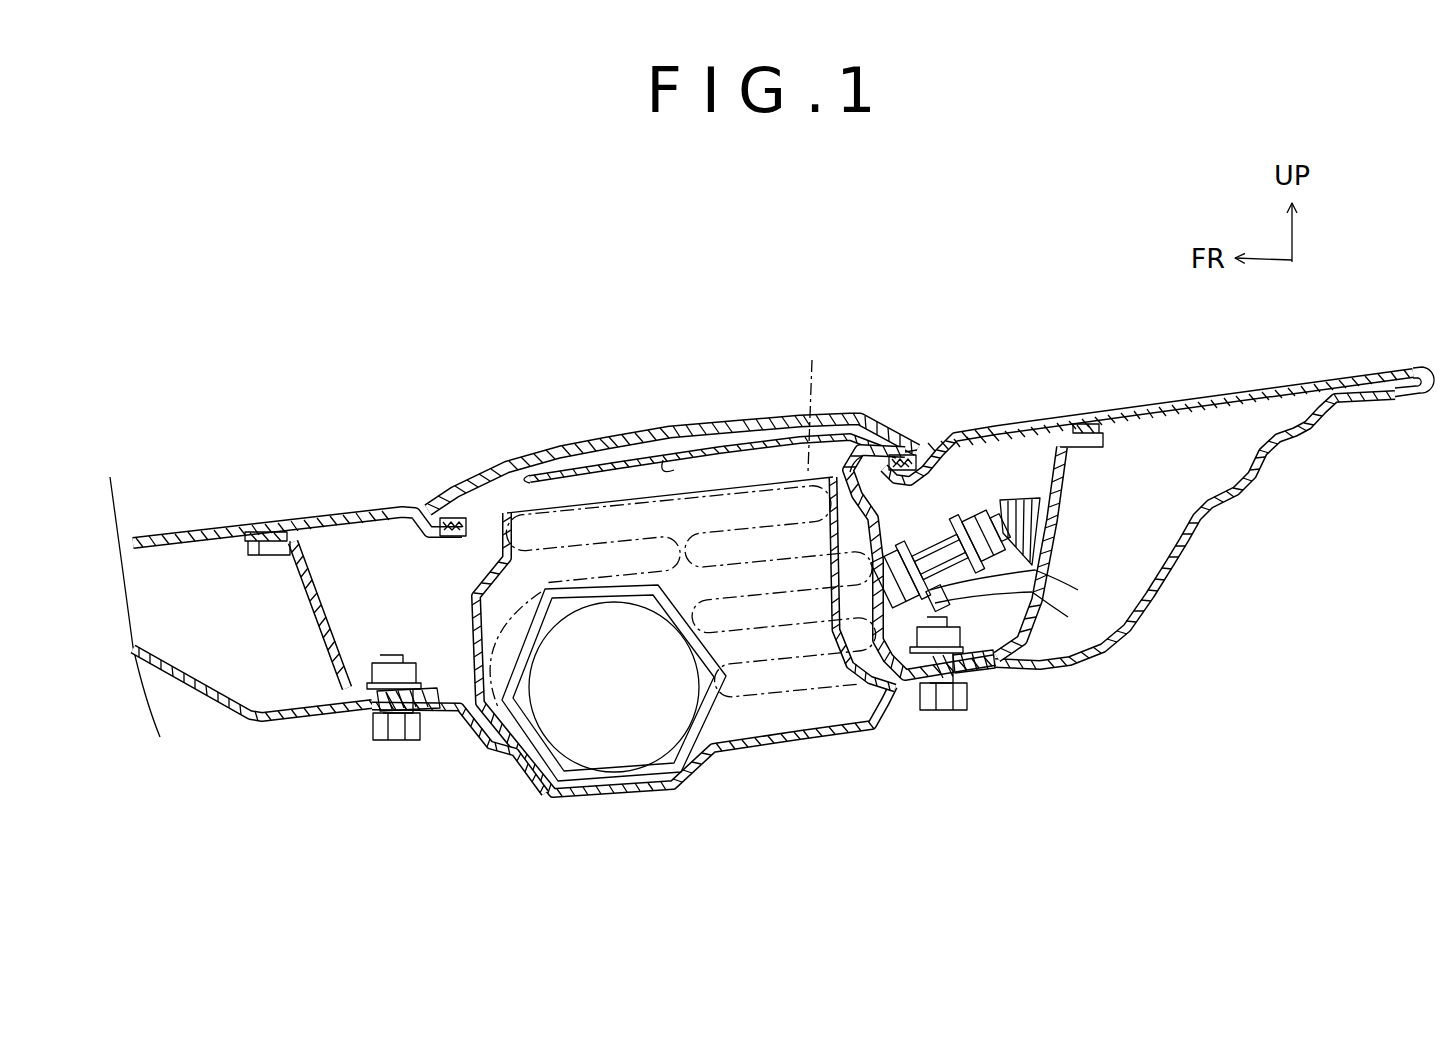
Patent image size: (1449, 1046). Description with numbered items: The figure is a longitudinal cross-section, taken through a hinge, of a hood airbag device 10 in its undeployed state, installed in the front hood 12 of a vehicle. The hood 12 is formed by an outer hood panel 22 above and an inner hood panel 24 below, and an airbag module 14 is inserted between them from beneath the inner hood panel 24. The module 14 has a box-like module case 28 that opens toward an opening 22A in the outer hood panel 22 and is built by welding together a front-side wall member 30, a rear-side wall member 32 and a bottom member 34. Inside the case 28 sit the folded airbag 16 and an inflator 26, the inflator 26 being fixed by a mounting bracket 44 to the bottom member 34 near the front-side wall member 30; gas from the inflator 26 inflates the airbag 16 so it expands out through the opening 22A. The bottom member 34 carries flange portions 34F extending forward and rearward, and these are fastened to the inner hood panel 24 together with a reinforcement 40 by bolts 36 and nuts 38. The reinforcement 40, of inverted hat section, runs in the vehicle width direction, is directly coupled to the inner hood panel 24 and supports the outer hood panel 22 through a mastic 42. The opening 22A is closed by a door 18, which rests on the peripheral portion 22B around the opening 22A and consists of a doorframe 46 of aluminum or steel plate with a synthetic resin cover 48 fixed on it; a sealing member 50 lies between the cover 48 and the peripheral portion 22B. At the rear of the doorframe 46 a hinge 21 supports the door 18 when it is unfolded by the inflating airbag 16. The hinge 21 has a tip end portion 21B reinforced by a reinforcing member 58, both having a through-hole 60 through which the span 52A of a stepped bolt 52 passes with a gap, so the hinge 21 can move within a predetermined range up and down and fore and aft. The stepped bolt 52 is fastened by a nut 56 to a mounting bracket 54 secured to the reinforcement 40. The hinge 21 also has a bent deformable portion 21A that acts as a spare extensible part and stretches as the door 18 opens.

The hood airbag device 10 is at (680, 327).
The front hood 12 is at (345, 462).
The airbag module 14 is at (806, 803).
The airbag 16 is at (812, 396).
The door 18 is at (752, 382).
The hinge 21 is at (868, 447).
The deformable portion 21A is at (880, 482).
The tip end portion 21B is at (907, 700).
The outer hood panel 22 is at (1133, 397).
The opening 22A is at (577, 488).
The peripheral portion 22B is at (445, 538).
The inner hood panel 24 is at (1092, 658).
The inflator 26 is at (575, 776).
The module case 28 is at (486, 694).
The front-side wall member 30 is at (468, 614).
The rear-side wall member 32 is at (830, 530).
The bottom member 34 is at (735, 746).
The flange portions 34F is at (378, 713).
The bolts 36 is at (398, 741).
The nuts 38 is at (370, 683).
The reinforcement 40 is at (300, 605).
The mastic 42 is at (248, 542).
The mounting bracket 44 is at (688, 622).
The doorframe 46 is at (667, 458).
The cover 48 is at (600, 440).
The sealing member 50 is at (440, 520).
The stepped bolt 52 is at (872, 598).
The span 52A is at (932, 545).
The mounting bracket 54 is at (1027, 500).
The nut 56 is at (1012, 566).
The reinforcing member 58 is at (1067, 613).
The through-hole 60 is at (1078, 600).